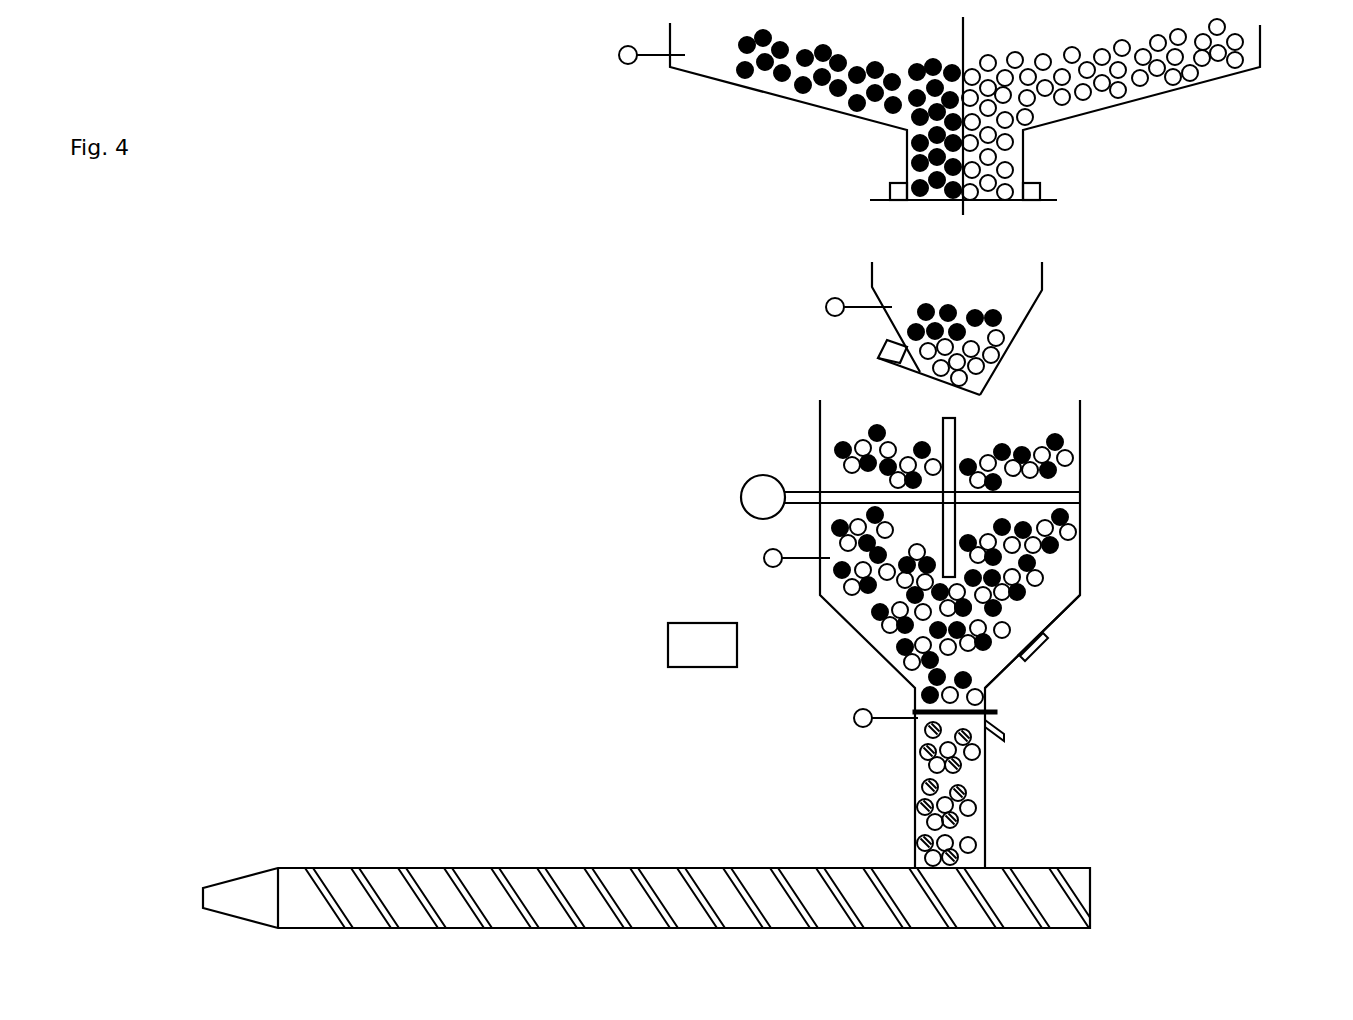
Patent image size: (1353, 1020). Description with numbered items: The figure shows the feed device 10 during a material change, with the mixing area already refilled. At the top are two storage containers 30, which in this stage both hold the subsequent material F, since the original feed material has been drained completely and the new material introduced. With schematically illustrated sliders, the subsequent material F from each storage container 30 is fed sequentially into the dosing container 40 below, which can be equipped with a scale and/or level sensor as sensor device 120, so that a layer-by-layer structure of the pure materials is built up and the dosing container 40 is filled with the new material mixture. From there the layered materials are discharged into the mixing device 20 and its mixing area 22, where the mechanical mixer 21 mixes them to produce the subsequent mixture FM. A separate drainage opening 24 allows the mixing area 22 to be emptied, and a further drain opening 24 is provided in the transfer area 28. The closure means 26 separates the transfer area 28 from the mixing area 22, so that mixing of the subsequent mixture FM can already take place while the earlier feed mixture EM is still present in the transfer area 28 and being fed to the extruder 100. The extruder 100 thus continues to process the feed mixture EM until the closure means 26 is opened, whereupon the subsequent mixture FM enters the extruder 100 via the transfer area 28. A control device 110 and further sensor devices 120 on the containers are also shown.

The feed device 10 is at (444, 256).
The mixing device 20 is at (1215, 607).
The mixer 21 is at (950, 433).
The mixing area 22 is at (1048, 593).
The drainage opening 24 is at (1050, 645).
The closure means 26 is at (996, 710).
The transfer area 28 is at (977, 760).
The storage container 30 is at (1150, 88).
The dosing container 40 is at (1013, 322).
The extruder 100 is at (385, 878).
The control device 110 is at (678, 628).
The sensor device 120 is at (619, 55).
The subsequent material F is at (819, 100).
The subsequent mixture FM is at (1070, 554).
The feed mixture EM is at (975, 858).